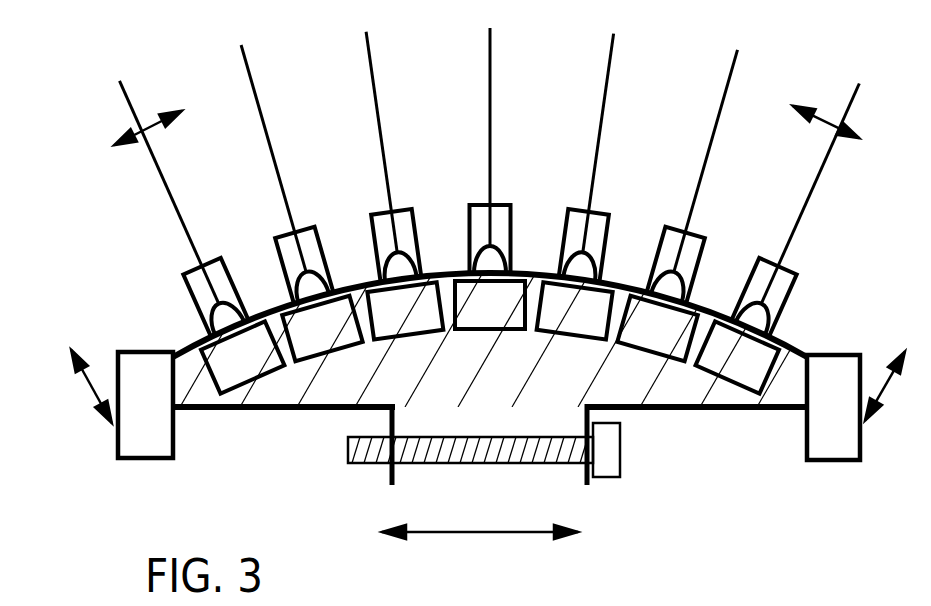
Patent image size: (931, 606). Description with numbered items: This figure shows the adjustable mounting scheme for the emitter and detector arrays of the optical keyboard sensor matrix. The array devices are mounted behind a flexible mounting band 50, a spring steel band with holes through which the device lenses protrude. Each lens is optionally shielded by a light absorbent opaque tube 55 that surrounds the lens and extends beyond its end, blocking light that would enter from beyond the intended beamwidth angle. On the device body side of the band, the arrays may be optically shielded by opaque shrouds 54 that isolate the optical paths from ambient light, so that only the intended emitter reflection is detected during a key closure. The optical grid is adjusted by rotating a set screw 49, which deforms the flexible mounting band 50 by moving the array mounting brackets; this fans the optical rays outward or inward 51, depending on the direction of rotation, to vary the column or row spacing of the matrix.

The set screw 49 is at (617, 462).
The flexible mounting band 50 is at (90, 392).
The fanning of optical rays outward or inward 51 is at (146, 124).
The opaque shroud 54 is at (683, 377).
The light absorbent opaque tube 55 is at (786, 309).